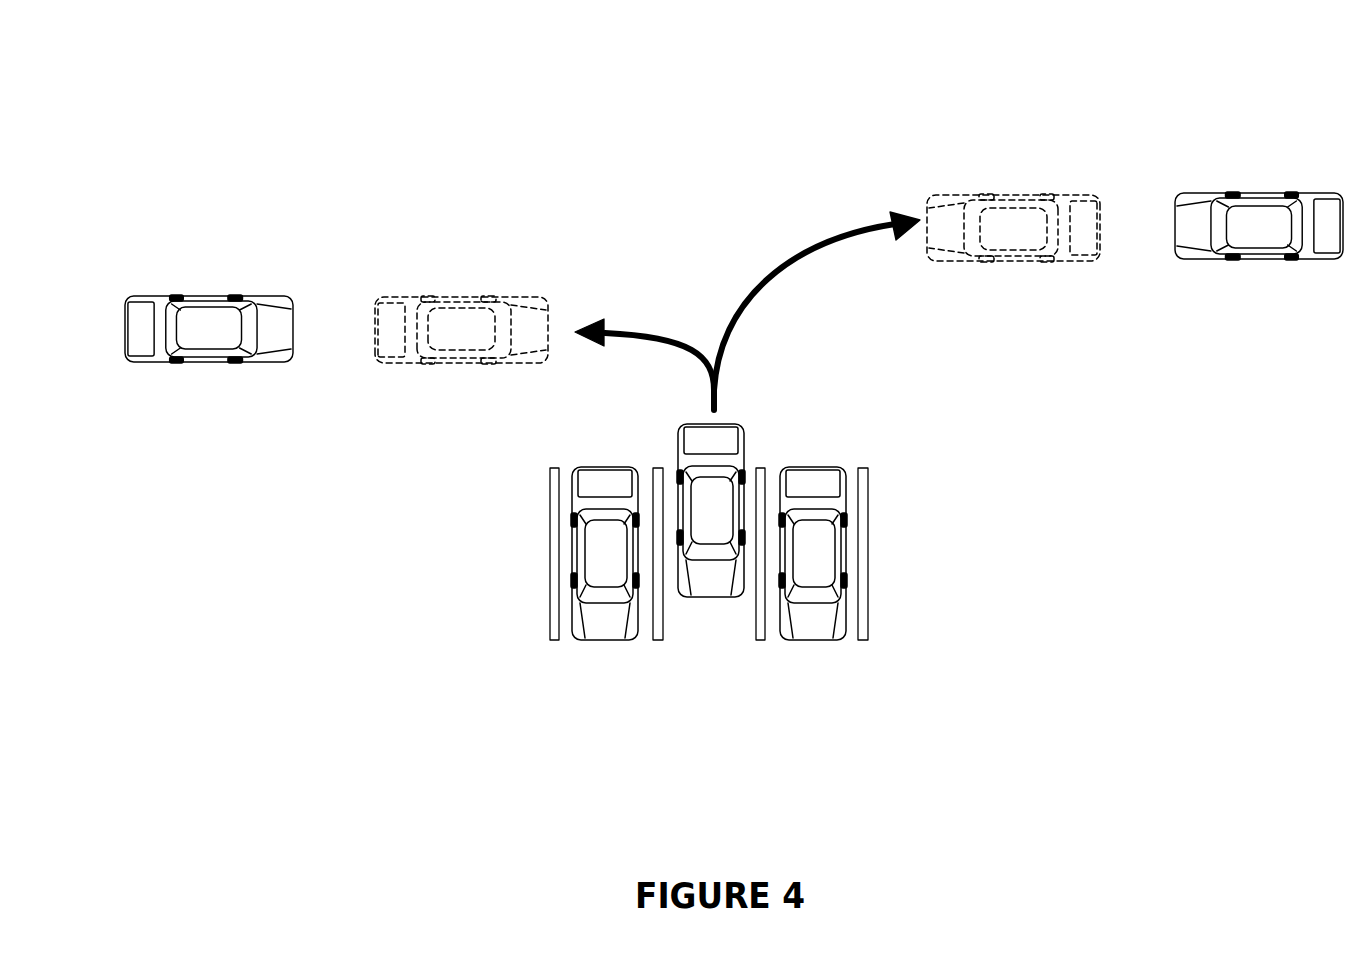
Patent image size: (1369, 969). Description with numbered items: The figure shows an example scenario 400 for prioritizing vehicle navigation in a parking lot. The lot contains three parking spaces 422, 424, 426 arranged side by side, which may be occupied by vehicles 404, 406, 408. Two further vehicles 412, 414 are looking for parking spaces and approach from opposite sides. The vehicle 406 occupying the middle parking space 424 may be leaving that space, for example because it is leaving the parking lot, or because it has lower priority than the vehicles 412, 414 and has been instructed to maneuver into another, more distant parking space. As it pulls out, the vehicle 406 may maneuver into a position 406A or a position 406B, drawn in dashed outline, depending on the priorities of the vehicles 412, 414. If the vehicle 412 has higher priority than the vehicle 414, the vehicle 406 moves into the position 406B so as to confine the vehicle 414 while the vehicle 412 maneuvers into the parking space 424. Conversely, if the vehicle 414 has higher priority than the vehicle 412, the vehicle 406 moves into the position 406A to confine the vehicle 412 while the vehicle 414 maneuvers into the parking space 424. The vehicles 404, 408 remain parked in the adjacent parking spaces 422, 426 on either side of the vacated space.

The scenario 400 is at (952, 68).
The vehicle 404 is at (607, 553).
The vehicle 406 is at (708, 510).
The position 406A is at (465, 332).
The position 406B is at (1022, 227).
The vehicle 408 is at (812, 543).
The vehicle 412 is at (207, 332).
The vehicle 414 is at (1278, 227).
The parking space 422 is at (613, 670).
The parking space 424 is at (707, 670).
The parking space 426 is at (802, 670).